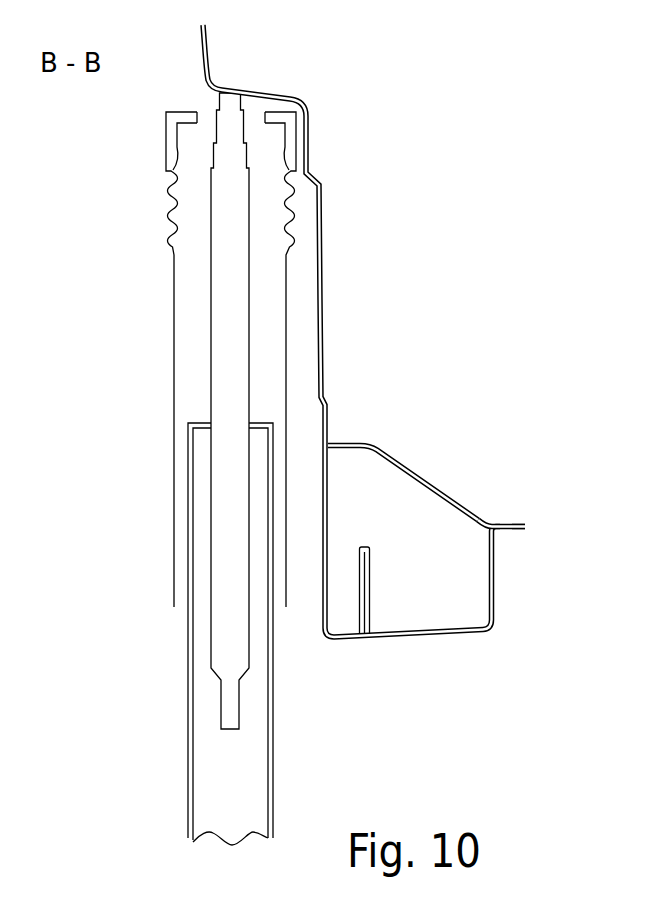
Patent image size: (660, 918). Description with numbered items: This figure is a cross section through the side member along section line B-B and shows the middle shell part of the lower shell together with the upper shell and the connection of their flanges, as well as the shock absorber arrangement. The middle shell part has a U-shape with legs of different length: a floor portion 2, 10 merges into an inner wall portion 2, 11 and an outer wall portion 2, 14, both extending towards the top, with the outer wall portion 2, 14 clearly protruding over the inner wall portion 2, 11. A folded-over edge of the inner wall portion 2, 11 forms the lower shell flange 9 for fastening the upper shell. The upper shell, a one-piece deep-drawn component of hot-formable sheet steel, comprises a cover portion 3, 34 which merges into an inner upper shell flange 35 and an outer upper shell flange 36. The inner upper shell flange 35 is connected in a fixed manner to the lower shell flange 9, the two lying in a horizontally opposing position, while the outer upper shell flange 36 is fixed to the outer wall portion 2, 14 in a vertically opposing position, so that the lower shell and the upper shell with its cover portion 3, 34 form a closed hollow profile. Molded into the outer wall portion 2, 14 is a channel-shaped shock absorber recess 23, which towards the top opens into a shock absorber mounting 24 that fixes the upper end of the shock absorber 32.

The shock absorber mounting 24 is at (233, 83).
The shock absorber recess 23 is at (325, 222).
The outer upper shell flange 36 is at (330, 408).
The shock absorber 32 is at (205, 450).
The housing / side wall 2, 14 is at (331, 507).
The housing / bottom wall 2, 10 is at (436, 640).
The housing / outer side wall 2, 11 is at (497, 608).
The carrier / sloped shelf 3, 34 is at (408, 465).
The inner upper shell flange 35 is at (497, 526).
The lower shell flange 9 is at (518, 532).